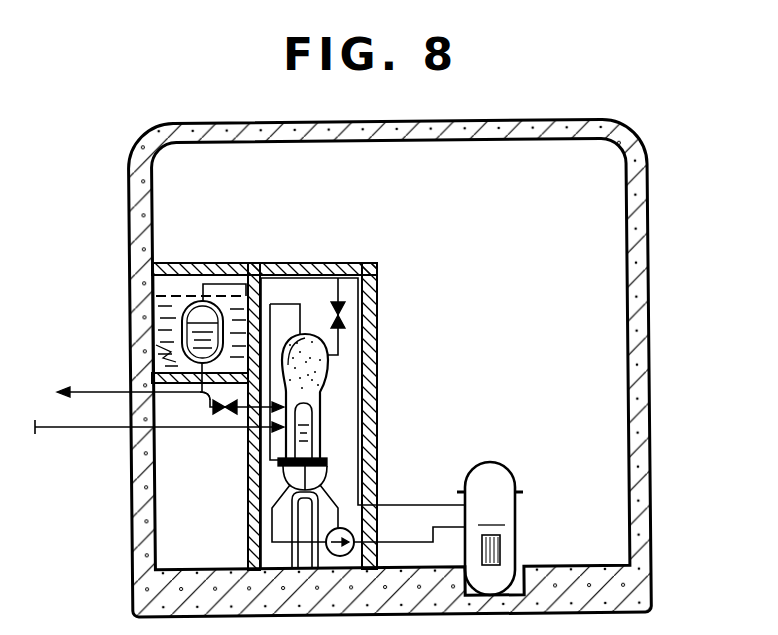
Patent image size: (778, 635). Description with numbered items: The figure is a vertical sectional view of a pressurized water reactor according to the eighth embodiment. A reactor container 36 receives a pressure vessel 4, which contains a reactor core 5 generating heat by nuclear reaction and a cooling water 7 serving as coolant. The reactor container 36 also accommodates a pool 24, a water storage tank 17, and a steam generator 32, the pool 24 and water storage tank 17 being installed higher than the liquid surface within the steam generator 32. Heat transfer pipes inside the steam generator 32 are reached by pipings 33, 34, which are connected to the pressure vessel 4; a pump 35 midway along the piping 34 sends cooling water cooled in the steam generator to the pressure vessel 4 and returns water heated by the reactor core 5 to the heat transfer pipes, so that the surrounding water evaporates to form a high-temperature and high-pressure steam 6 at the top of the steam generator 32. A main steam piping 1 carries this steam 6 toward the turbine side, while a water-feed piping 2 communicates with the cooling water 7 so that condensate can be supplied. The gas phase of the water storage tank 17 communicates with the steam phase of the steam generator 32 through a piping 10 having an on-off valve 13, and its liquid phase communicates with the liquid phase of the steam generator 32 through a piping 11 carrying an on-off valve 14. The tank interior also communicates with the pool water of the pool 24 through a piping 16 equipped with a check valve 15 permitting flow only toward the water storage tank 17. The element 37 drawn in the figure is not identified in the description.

The reactor container 36 is at (646, 292).
The piping 10 is at (298, 275).
The piping 16 is at (160, 352).
The pool 24 is at (195, 300).
The water storage tank 17 is at (228, 318).
The piping 11 is at (204, 408).
The main steam piping 1 is at (78, 392).
The water-feed piping 2 is at (87, 427).
The on-off valve 14 is at (227, 415).
The check valve 15 is at (200, 392).
The piping 33 is at (365, 505).
The on-off valve 13 is at (346, 318).
The vessel 37 is at (332, 388).
The high-temperature and high-pressure steam 6 is at (303, 358).
The steam generator 32 is at (322, 428).
The pump 35 is at (338, 510).
The piping 34 is at (413, 542).
The pressure vessel 4 is at (499, 430).
The cooling water 7 is at (492, 520).
The reactor core 5 is at (500, 548).